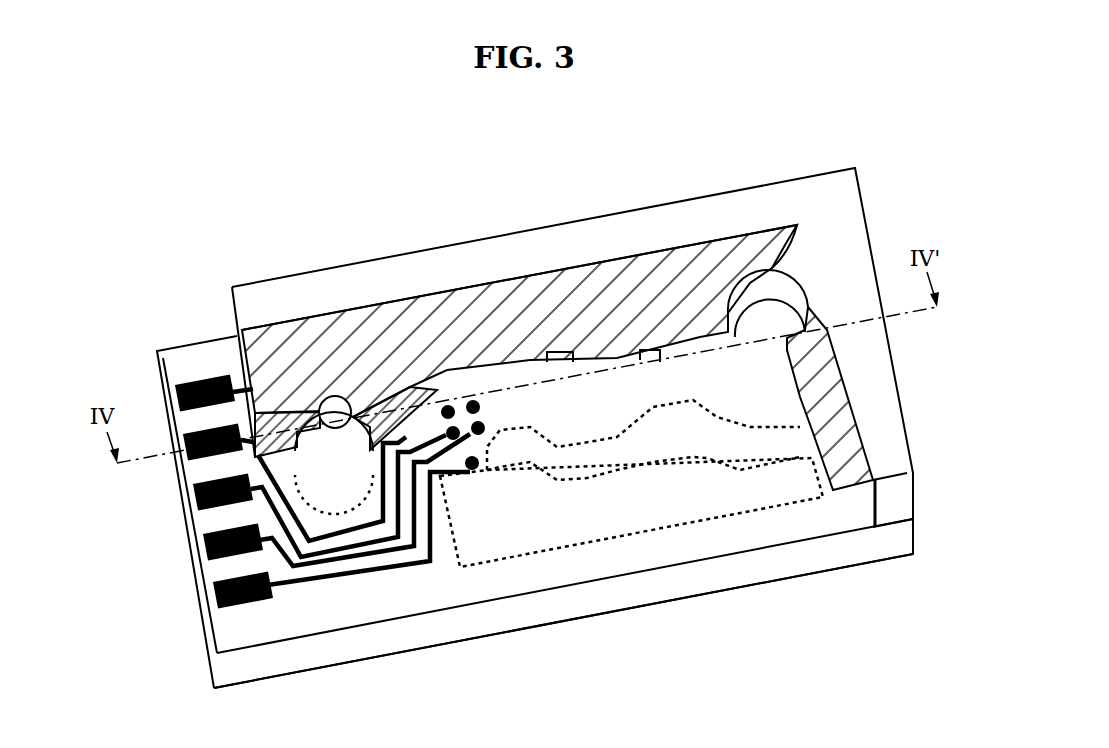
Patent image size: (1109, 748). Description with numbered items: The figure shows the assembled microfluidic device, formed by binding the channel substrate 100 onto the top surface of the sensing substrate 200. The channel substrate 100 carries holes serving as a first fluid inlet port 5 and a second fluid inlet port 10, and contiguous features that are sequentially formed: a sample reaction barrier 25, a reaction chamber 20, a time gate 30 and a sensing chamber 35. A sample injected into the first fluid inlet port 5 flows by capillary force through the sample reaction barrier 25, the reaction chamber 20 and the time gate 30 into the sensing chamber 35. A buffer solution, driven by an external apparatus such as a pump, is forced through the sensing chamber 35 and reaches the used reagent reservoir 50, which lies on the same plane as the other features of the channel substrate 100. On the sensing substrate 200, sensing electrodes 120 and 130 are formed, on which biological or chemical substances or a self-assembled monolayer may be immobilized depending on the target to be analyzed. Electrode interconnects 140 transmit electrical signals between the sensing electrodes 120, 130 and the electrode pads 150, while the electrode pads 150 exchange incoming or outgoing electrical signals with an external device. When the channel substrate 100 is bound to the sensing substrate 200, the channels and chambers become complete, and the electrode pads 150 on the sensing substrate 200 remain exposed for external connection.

The first fluid inlet port 5 is at (772, 267).
The second fluid inlet port 10 is at (335, 398).
The reaction chamber 20 is at (580, 363).
The sample reaction barrier 25 is at (675, 367).
The time gate 30 is at (500, 377).
The sensing chamber 35 is at (508, 387).
The used reagent reservoir 50 is at (822, 466).
The channel substrate 100 is at (887, 415).
The sensing electrode 120 is at (488, 433).
The sensing electrode 130 is at (472, 470).
The electrode interconnects 140 is at (358, 573).
The electrode pads 150 is at (210, 597).
The sensing substrate 200 is at (637, 590).